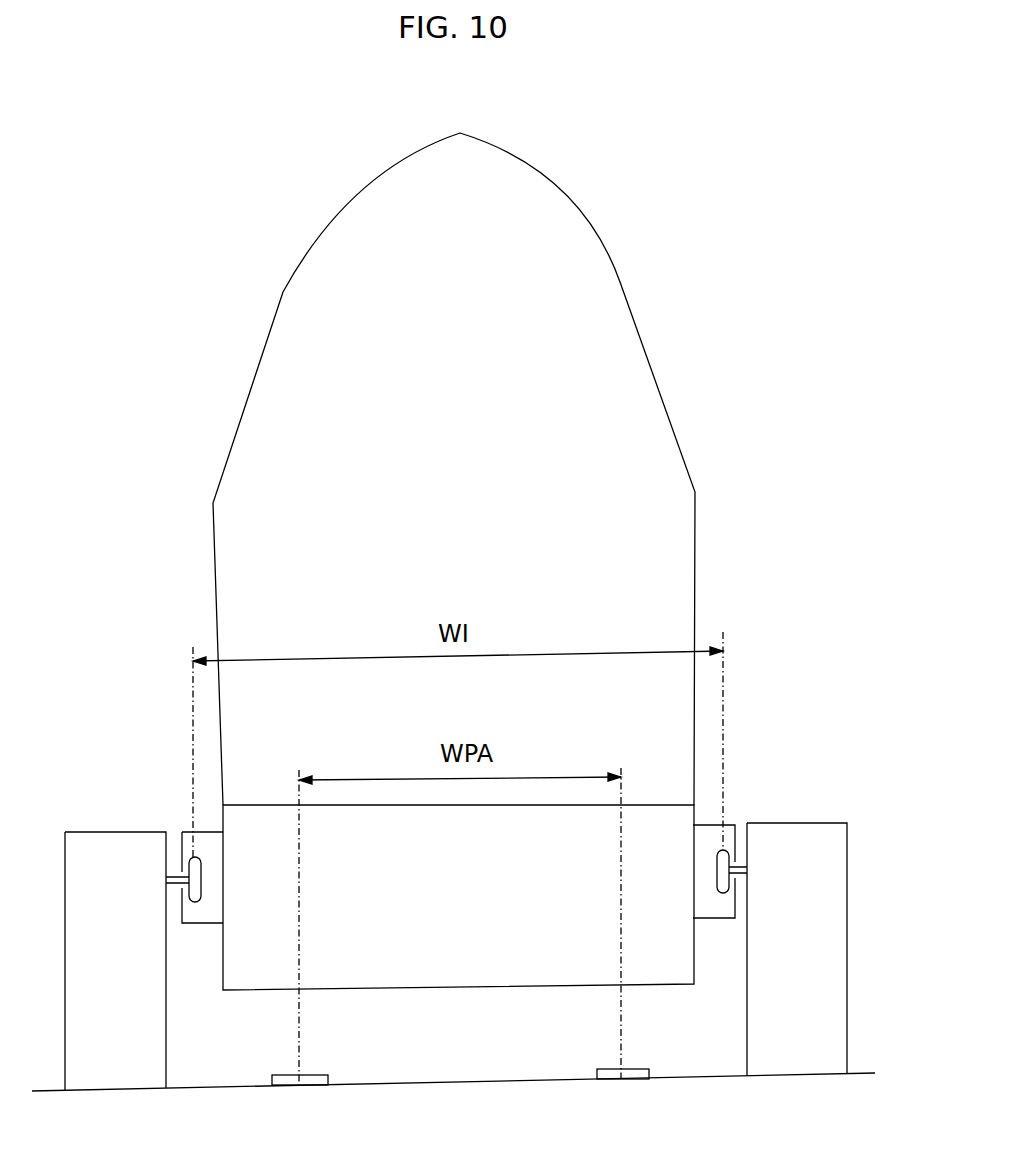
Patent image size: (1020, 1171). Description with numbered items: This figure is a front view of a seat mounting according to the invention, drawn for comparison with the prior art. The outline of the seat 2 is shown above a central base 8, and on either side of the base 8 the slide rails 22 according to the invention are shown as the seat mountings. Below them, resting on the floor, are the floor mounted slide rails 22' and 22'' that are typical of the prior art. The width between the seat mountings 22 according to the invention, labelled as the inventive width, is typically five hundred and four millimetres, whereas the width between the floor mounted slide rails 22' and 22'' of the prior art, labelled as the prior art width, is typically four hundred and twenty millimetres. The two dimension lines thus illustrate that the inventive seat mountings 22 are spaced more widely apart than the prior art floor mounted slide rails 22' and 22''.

The boat hull 2 is at (606, 207).
The support base 8 is at (480, 909).
The slide rails 22 is at (456, 874).
The floor mounted slide rail 22' is at (336, 1062).
The floor mounted slide rail 22'' is at (650, 1054).